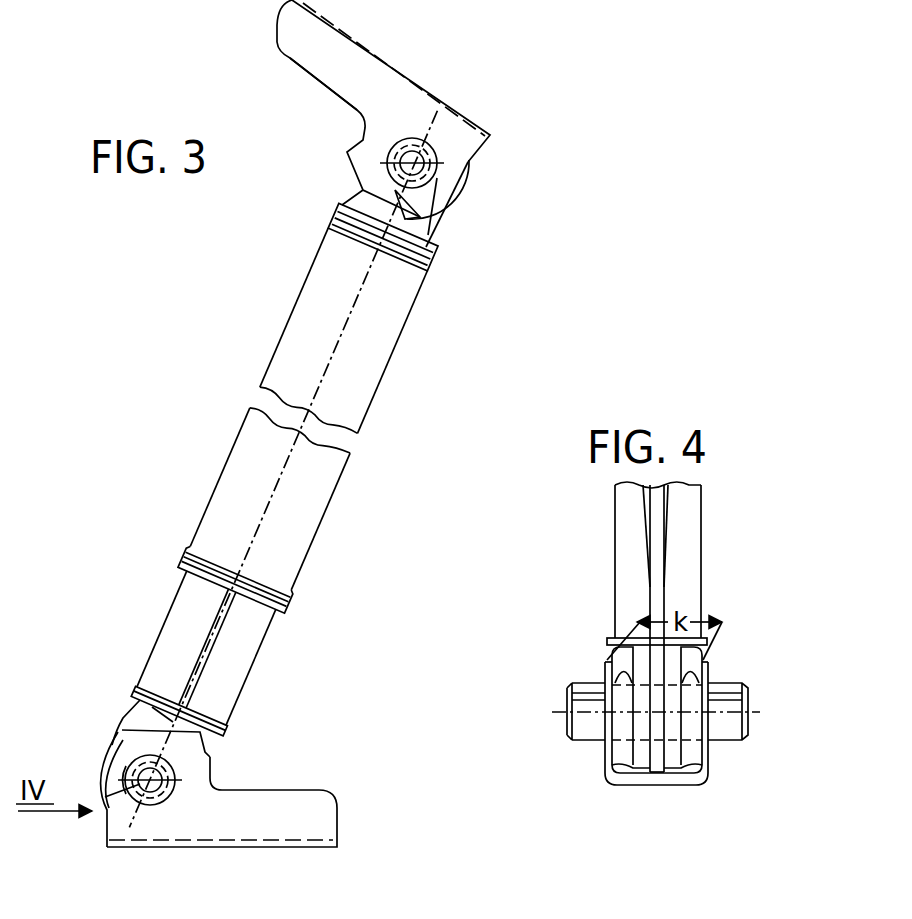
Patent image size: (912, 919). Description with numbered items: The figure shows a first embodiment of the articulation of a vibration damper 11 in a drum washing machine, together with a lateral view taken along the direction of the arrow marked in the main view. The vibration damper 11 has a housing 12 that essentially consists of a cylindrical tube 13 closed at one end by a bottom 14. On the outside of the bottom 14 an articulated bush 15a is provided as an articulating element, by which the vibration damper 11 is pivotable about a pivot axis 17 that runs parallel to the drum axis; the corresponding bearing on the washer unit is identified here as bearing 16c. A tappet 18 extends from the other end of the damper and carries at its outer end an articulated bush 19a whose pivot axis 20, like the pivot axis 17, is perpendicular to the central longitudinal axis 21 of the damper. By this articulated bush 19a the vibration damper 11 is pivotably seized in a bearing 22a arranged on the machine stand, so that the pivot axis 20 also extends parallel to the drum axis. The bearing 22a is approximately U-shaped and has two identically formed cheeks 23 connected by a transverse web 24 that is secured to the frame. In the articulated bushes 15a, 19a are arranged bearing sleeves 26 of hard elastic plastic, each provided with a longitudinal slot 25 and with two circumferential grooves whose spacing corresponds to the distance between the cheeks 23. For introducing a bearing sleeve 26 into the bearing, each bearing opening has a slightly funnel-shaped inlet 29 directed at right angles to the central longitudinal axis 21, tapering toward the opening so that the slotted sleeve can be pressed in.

In FIG. 3, the vibration damper 11 is at (386, 410).
In FIG. 3, the housing 12 is at (350, 478).
In FIG. 3, the cylindrical tube 13 is at (293, 505).
In FIG. 3, the bottom 14 is at (434, 244).
In FIG. 3, the articulated bush 15a is at (455, 203).
In FIG. 3, the upper mounting bracket 16c is at (276, 37).
In FIG. 3, the pivot axis 17 is at (400, 158).
In FIG. 3, the tappet 18 is at (185, 635).
In FIG. 3, the articulated bush 19a is at (165, 717).
In FIG. 3, the pivot axis 20 is at (160, 775).
In FIG. 3, the central longitudinal axis 21 is at (345, 325).
In FIG. 3, the bearing 22a is at (270, 790).
In FIG. 4, the bearing 22a is at (611, 789).
In FIG. 3, the cheeks 23 is at (310, 48).
In FIG. 4, the cheeks 23 is at (608, 755).
In FIG. 3, the transverse web 24 is at (405, 73).
In FIG. 4, the transverse web 24 is at (655, 787).
In FIG. 4, the longitudinal slot 25 is at (730, 702).
In FIG. 4, the bearing sleeve 26 is at (565, 727).
In FIG. 3, the inlet 29 is at (125, 762).